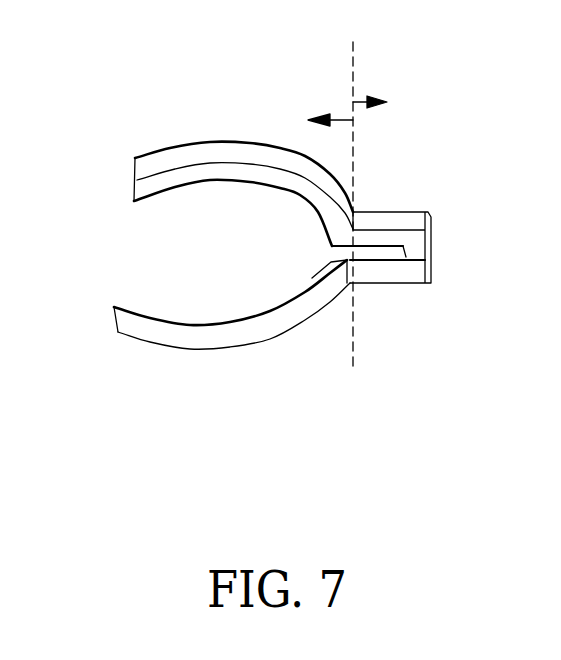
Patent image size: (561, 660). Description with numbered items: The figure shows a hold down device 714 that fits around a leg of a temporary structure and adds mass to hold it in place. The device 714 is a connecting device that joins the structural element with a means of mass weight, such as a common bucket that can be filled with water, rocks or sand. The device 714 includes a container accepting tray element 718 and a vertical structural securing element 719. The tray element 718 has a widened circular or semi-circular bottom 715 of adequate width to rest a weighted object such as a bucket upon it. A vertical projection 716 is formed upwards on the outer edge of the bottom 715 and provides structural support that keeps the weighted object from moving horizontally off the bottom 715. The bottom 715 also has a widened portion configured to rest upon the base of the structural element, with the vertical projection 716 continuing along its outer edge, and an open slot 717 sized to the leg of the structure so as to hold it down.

The device 714 is at (124, 323).
The widened circular or semi-circular bottom 715 is at (148, 186).
The vertical projection 716 is at (263, 160).
The open slot 717 is at (362, 250).
The container accepting tray element 718 is at (327, 117).
The vertical structural securing element 719 is at (375, 100).